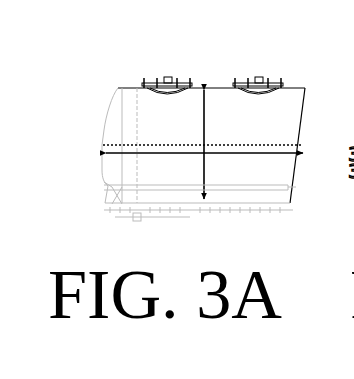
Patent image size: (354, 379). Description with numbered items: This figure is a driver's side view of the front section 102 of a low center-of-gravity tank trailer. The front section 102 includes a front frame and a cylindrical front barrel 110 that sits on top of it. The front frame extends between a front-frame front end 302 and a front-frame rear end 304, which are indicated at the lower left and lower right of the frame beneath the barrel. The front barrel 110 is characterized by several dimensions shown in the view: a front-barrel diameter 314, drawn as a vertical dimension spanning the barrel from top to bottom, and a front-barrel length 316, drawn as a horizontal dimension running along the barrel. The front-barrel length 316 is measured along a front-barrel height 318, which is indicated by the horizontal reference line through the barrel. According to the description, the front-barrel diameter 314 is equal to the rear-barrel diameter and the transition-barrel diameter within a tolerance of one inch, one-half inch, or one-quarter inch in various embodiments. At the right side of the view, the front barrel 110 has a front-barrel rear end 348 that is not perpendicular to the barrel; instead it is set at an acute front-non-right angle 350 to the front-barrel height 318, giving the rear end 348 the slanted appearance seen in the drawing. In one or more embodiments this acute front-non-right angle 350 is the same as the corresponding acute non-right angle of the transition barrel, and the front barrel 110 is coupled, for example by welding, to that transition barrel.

The front section 102 is at (205, 84).
The front barrel 110 is at (132, 87).
The front-frame front end 302 is at (106, 207).
The front-frame rear end 304 is at (294, 207).
The front-barrel diameter 314 is at (203, 116).
The front-barrel length 316 is at (278, 155).
The front-barrel height 318 is at (278, 145).
The front-barrel rear end 348 is at (295, 178).
The acute front-non-right angle 350 is at (302, 146).